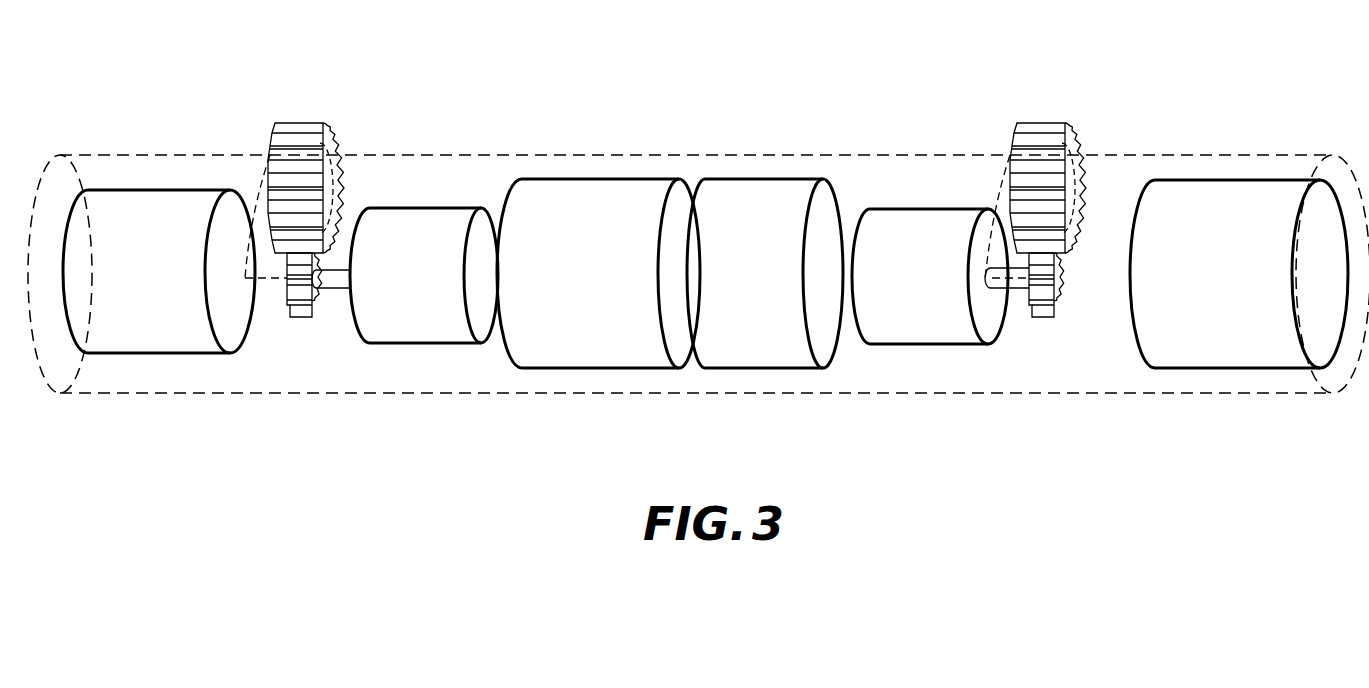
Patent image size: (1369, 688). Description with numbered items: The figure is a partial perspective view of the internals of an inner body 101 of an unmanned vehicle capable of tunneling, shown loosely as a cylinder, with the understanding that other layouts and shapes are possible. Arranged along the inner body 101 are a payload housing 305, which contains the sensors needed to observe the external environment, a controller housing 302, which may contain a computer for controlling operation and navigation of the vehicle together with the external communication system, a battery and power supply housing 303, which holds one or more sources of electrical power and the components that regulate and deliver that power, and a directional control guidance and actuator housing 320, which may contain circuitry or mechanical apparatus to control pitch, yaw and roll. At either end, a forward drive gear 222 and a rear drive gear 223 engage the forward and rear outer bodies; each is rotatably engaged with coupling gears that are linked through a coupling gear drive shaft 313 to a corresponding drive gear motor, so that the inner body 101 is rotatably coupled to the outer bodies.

The inner body 101 is at (900, 50).
The forward drive gear 222 is at (305, 122).
The rear drive gear 223 is at (1047, 122).
The controller housing 302 is at (558, 290).
The battery and power supply housing 303 is at (732, 290).
The payload housing 305 is at (127, 290).
The coupling gear drive shaft 313 is at (1013, 290).
The directional control guidance and actuator housing 320 is at (1216, 290).